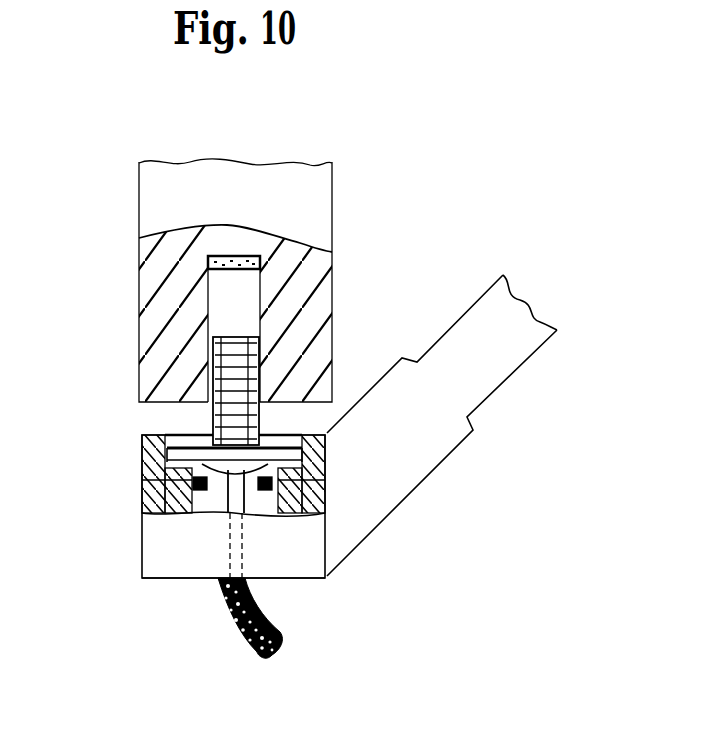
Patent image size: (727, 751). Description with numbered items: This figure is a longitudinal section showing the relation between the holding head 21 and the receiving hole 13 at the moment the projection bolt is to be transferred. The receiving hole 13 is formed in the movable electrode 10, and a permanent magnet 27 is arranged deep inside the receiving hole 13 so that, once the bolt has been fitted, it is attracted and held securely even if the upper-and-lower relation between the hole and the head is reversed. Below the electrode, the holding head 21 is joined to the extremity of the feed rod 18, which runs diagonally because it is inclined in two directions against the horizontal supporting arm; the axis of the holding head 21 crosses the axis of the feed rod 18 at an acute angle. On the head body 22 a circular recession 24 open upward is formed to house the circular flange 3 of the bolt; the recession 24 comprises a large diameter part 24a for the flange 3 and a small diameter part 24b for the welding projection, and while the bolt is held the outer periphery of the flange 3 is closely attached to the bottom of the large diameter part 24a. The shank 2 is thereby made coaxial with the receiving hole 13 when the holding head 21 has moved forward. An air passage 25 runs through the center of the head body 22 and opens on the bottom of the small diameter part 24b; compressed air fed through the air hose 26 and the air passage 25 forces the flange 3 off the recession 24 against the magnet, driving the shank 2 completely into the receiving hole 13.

The movable electrode 10 is at (148, 200).
The receiving hole 13 is at (215, 293).
The permanent magnet 27 is at (227, 258).
The shank 2 is at (233, 336).
The large diameter part 24a is at (302, 432).
The circular recession 24 is at (165, 418).
The small diameter part 24b is at (147, 498).
The circular flange 3 is at (150, 459).
The air passage 25 is at (206, 513).
The head body 22 is at (142, 560).
The holding head 21 is at (180, 588).
The air hose 26 is at (278, 625).
The feed rod 18 is at (517, 373).